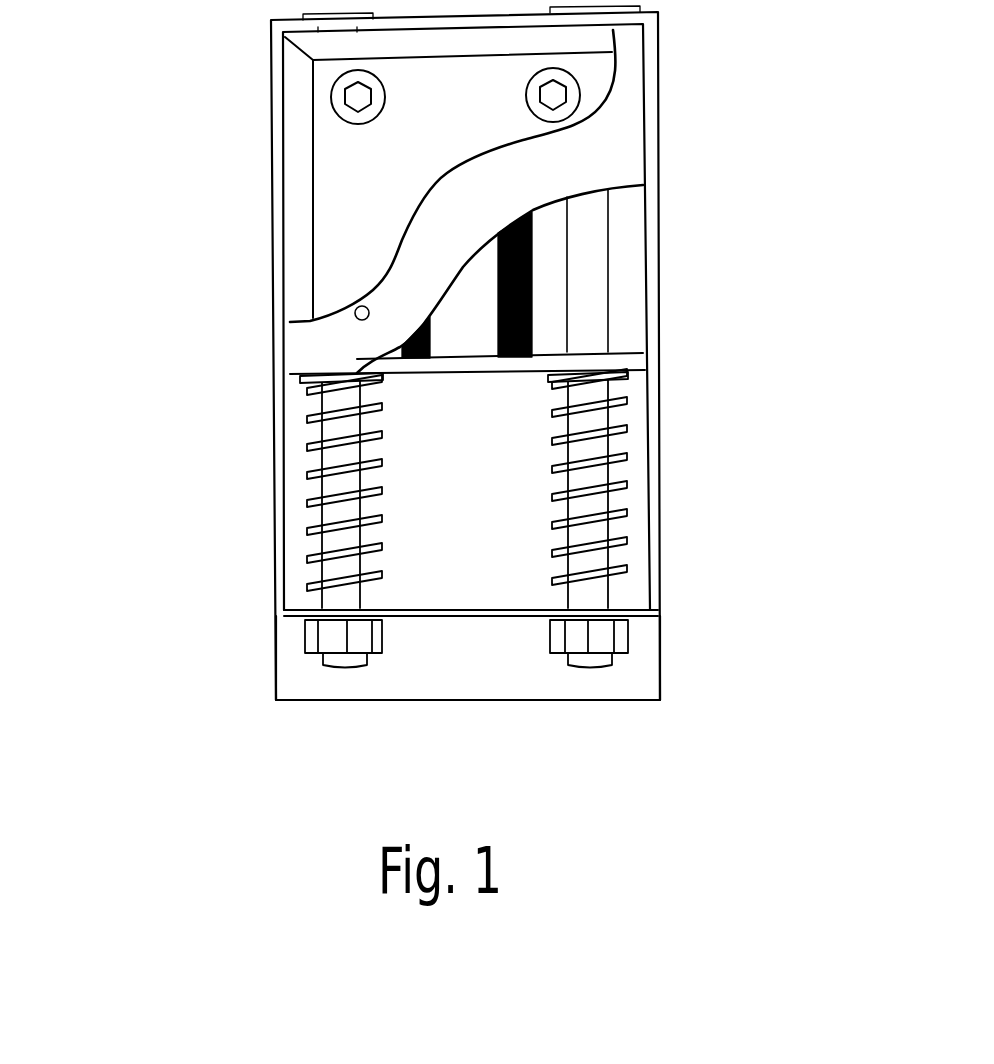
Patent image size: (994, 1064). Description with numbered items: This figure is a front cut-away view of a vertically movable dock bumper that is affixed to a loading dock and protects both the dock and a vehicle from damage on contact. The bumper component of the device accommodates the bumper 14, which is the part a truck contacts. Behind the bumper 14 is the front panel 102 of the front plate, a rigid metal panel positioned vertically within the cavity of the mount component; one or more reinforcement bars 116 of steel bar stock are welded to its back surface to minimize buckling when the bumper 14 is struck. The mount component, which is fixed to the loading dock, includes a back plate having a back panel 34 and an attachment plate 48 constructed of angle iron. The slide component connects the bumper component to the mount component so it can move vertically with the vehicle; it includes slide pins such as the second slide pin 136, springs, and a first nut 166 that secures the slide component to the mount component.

The bumper 14 is at (340, 172).
The front panel 102 is at (622, 118).
The reinforcement bar 116 is at (533, 255).
The second slide pin 136 is at (590, 330).
The back panel 34 is at (430, 473).
The first nut 166 is at (332, 640).
The attachment plate 48 is at (642, 660).